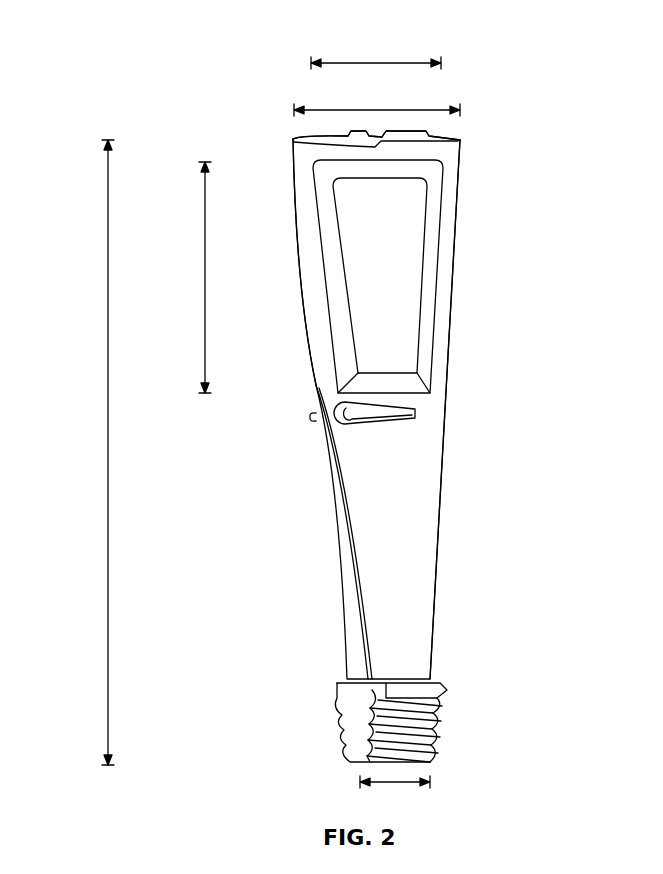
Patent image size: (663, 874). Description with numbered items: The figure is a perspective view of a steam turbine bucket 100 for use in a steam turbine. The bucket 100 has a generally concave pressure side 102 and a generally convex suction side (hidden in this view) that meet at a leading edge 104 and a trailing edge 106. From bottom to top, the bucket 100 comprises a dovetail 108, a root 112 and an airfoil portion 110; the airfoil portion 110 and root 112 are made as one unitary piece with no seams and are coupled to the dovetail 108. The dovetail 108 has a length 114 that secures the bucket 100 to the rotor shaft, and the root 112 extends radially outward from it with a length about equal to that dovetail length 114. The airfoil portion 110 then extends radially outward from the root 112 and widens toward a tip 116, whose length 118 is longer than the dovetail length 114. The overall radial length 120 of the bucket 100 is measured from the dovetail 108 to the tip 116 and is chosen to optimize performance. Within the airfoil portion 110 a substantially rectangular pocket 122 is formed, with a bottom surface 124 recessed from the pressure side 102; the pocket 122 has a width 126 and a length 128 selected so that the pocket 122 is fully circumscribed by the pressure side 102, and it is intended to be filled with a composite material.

The steam turbine bucket 100 is at (158, 53).
The pressure side 102 is at (345, 483).
The leading edge 104 is at (312, 372).
The trailing edge 106 is at (445, 418).
The dovetail 108 is at (420, 735).
The airfoil portion 110 is at (423, 473).
The root 112 is at (413, 678).
The dovetail length 114 is at (395, 785).
The tip 116 is at (445, 140).
The tip length 118 is at (378, 110).
The radial length 120 is at (107, 455).
The pocket 122 is at (410, 288).
The bottom surface 124 is at (408, 233).
The pocket width 126 is at (378, 63).
The pocket length 128 is at (205, 275).